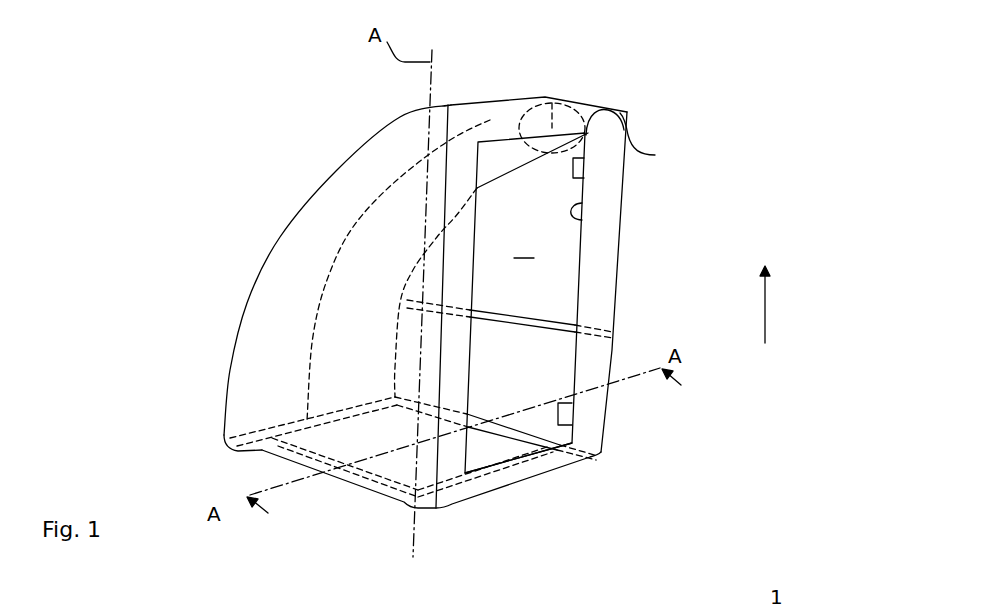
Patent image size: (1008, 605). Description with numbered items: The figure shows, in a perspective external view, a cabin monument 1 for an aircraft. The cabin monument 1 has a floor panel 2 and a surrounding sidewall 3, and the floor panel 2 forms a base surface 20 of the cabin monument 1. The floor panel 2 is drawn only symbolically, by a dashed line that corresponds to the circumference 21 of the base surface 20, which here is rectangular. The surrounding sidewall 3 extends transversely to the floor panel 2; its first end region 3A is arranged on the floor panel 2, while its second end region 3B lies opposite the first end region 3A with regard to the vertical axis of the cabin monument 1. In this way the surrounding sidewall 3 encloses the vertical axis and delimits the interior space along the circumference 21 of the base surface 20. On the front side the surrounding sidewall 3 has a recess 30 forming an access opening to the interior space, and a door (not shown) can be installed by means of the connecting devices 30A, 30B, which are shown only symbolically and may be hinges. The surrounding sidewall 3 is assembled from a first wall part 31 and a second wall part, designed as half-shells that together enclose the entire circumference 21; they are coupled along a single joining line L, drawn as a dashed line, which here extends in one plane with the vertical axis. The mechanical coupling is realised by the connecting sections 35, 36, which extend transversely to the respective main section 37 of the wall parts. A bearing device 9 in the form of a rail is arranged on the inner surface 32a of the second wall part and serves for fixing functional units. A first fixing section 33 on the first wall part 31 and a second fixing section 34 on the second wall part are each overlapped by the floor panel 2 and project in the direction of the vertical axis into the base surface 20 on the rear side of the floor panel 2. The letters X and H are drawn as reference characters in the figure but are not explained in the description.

The cabin monument 1 is at (633, 60).
The floor panel 2 is at (373, 481).
The surrounding sidewall 3 is at (627, 245).
The first end region 3A is at (332, 480).
The second end region 3B is at (510, 95).
The bearing device 9 is at (556, 322).
The base surface 20 is at (274, 436).
The circumference 21 is at (258, 452).
The recess 30 is at (583, 215).
The connecting device 30A is at (585, 168).
The connecting device 30B is at (567, 418).
The first wall part 31 is at (273, 272).
The inner surface 32a is at (497, 297).
The first fixing section 33 is at (455, 484).
The second fixing section 34 is at (545, 465).
The first connecting section 35 is at (374, 270).
The second connecting section 36 is at (355, 225).
The main section 37 is at (490, 125).
The joining line L is at (325, 279).
The axis X is at (654, 139).
The height direction H is at (765, 307).